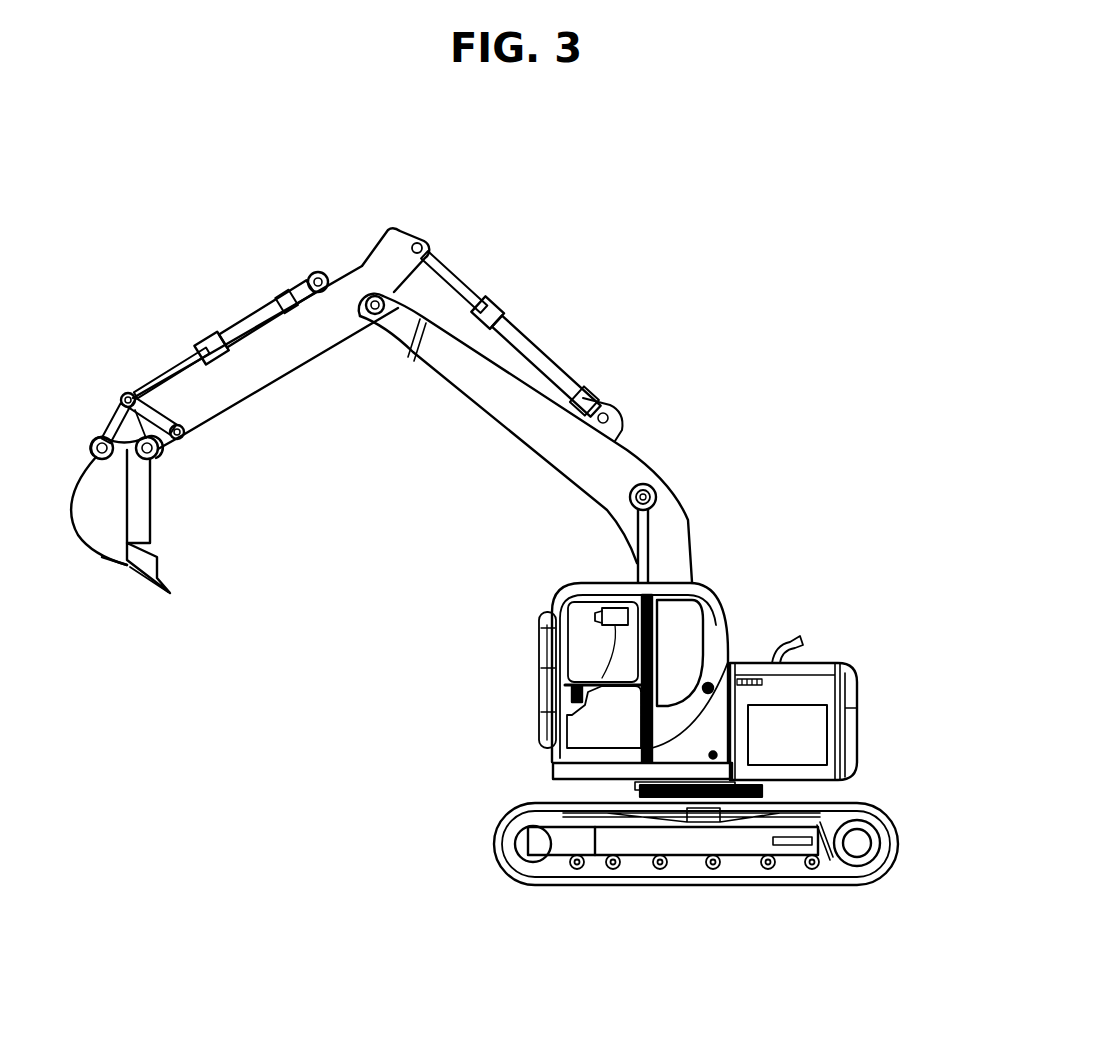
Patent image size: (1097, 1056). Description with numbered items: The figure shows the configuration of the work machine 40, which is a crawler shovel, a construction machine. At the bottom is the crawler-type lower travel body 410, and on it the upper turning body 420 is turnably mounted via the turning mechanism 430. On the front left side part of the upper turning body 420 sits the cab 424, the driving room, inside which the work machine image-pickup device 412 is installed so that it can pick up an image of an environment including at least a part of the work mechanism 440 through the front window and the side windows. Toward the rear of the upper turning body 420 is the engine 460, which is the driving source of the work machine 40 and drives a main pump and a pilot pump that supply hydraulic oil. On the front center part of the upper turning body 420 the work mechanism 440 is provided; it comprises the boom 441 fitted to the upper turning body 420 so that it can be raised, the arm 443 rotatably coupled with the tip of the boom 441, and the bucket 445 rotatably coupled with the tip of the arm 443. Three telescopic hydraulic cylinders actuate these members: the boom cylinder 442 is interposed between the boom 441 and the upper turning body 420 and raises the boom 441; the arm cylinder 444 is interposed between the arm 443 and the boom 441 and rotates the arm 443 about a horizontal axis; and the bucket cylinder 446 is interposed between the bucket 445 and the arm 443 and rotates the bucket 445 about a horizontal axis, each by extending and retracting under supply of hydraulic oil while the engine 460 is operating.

The work machine 40 is at (724, 215).
The lower travel body 410 is at (523, 805).
The work machine image-pickup device 412 is at (613, 608).
The upper turning body 420 is at (876, 718).
The cab 424 is at (727, 580).
The turning mechanism 430 is at (766, 791).
The work mechanism 440 is at (523, 272).
The boom 441 is at (680, 518).
The boom cylinder 442 is at (633, 563).
The arm 443 is at (275, 372).
The arm cylinder 444 is at (540, 342).
The bucket 445 is at (105, 545).
The bucket cylinder 446 is at (262, 307).
The engine 460 is at (795, 702).